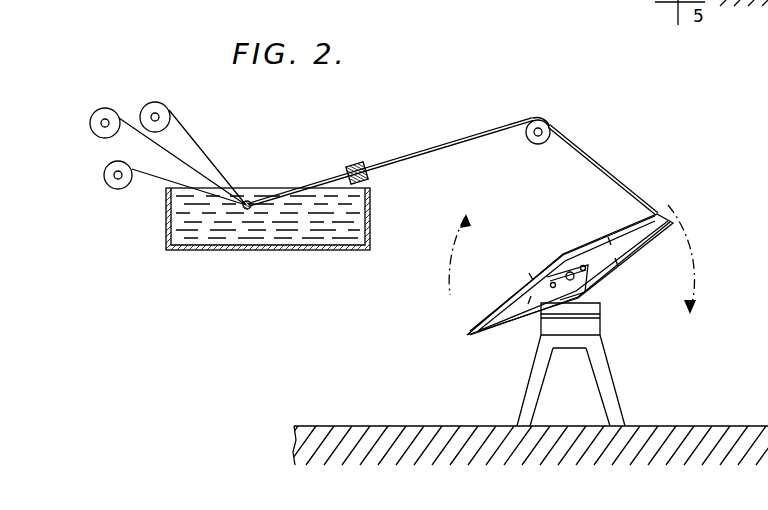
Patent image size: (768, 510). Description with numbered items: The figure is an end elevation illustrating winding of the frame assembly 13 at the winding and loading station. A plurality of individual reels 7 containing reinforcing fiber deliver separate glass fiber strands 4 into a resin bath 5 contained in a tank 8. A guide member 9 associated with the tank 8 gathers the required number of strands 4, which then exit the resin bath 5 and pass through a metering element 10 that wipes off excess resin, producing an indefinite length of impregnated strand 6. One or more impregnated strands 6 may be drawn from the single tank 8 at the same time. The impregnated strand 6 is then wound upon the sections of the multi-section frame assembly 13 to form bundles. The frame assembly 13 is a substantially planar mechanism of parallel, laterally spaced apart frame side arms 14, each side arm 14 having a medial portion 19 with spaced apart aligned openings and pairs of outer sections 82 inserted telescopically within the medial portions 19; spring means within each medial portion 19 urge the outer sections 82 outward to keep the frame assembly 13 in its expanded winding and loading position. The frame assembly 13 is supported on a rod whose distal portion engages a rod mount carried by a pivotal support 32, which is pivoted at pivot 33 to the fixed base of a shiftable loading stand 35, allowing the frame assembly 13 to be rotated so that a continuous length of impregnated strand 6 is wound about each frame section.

The strands 4 is at (168, 150).
The resin bath 5 is at (184, 222).
The impregnated strand 6 is at (464, 145).
The reels 7 is at (147, 103).
The tank 8 is at (313, 250).
The guide member 9 is at (249, 200).
The metering element 10 is at (355, 164).
The frame assembly 13 is at (533, 262).
The frame side arms 14 is at (664, 205).
The medial portion 19 is at (595, 258).
The pivotal support 32 is at (595, 306).
The pivot 33 is at (601, 326).
The loading stand 35 is at (535, 382).
The outer sections 82 is at (500, 318).